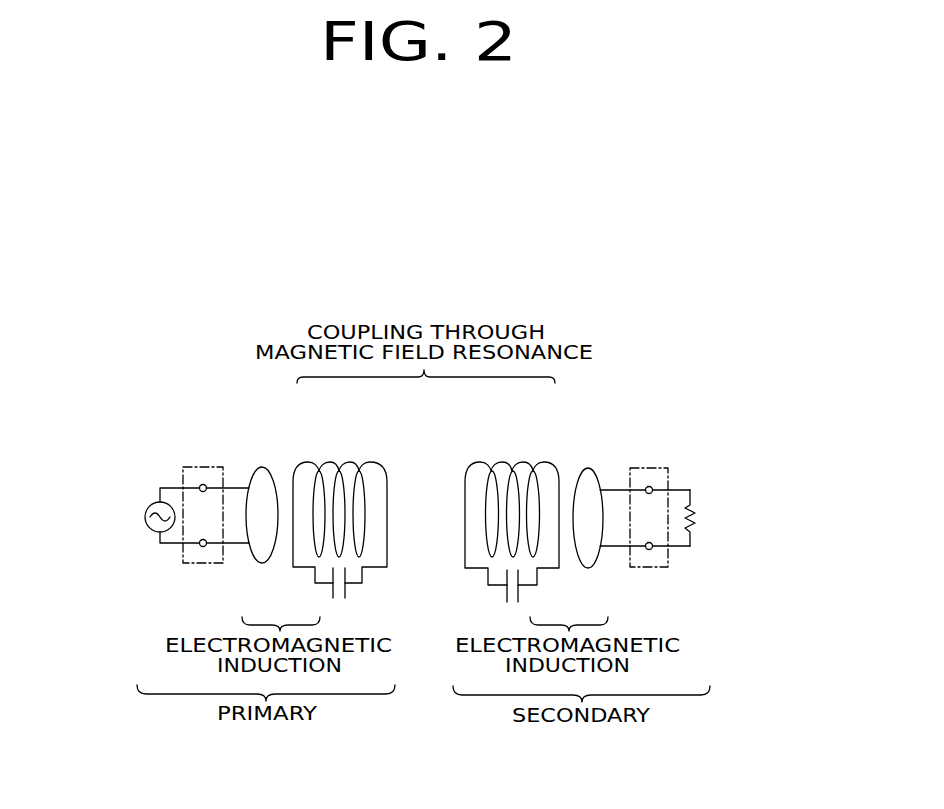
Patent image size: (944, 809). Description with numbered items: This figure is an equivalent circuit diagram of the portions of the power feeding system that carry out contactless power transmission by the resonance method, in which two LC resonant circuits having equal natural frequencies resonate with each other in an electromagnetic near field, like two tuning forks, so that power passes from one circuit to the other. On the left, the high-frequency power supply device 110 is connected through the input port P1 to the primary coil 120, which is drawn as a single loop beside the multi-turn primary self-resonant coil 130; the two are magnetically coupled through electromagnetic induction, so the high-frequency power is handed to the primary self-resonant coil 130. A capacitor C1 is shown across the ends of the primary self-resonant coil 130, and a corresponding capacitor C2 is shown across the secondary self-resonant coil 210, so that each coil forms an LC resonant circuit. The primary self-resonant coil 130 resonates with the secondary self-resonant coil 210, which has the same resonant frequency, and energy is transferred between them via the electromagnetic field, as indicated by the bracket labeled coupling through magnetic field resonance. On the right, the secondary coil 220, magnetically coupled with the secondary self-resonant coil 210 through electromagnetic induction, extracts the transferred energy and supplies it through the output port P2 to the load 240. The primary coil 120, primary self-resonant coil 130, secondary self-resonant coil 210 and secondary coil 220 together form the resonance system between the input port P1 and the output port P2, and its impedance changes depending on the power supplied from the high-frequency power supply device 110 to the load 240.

The high-frequency power supply device 110 is at (142, 517).
The input port P1 is at (192, 465).
The primary coil 120 is at (262, 465).
The primary self-resonant coil 130 is at (349, 458).
The primary capacitor C1 is at (346, 592).
The secondary self-resonant coil 210 is at (504, 458).
The secondary capacitor C2 is at (505, 592).
The secondary coil 220 is at (593, 466).
The output port P2 is at (660, 466).
The load 240 is at (697, 519).